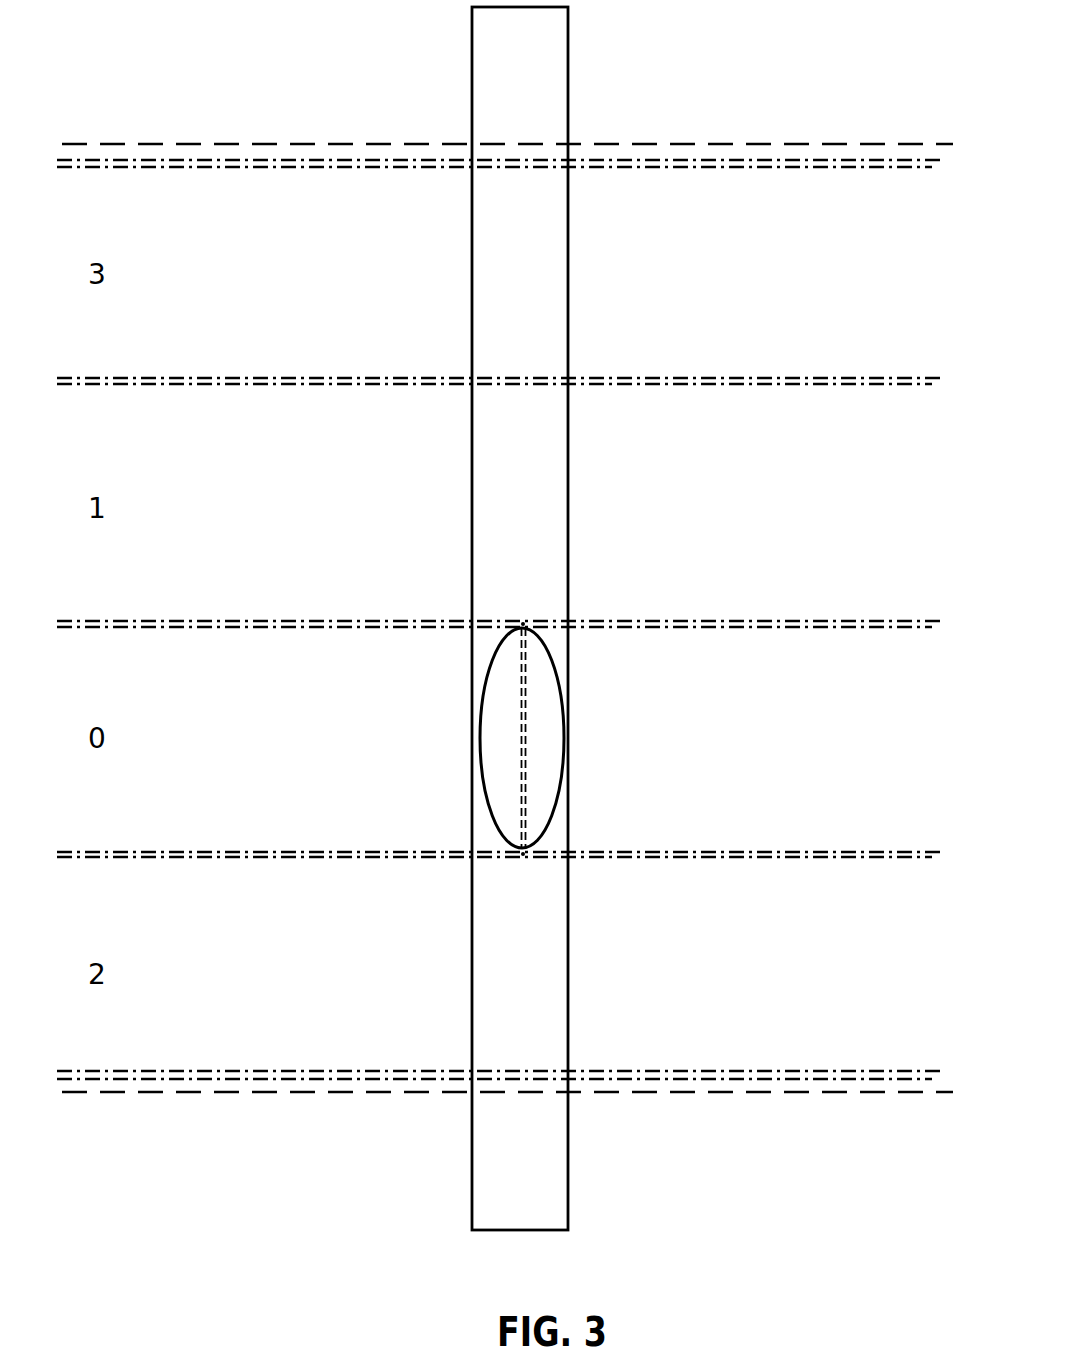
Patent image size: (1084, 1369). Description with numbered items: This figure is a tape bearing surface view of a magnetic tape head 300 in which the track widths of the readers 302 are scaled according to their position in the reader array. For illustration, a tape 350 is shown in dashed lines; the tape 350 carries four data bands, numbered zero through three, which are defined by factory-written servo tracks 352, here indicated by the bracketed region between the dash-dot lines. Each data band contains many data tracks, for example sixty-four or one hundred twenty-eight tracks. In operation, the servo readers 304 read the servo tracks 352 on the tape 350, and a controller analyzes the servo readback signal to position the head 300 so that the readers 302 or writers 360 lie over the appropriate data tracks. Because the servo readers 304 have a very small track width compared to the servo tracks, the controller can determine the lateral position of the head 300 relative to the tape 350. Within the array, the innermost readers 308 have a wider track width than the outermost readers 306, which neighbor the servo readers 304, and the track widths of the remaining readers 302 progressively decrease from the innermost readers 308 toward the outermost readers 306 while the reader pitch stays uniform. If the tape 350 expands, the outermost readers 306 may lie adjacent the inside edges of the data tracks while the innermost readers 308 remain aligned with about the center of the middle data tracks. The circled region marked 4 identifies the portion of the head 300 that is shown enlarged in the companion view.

The magnetic tape head 300 is at (472, 70).
The tape 350 is at (690, 144).
The servo tracks 352 is at (825, 855).
The section view indicator 4 is at (564, 768).
The outermost readers 306 is at (527, 712).
The servo readers 304 is at (508, 614).
The writers 360 is at (500, 740).
The readers 302 is at (544, 732).
The innermost readers 308 is at (527, 744).